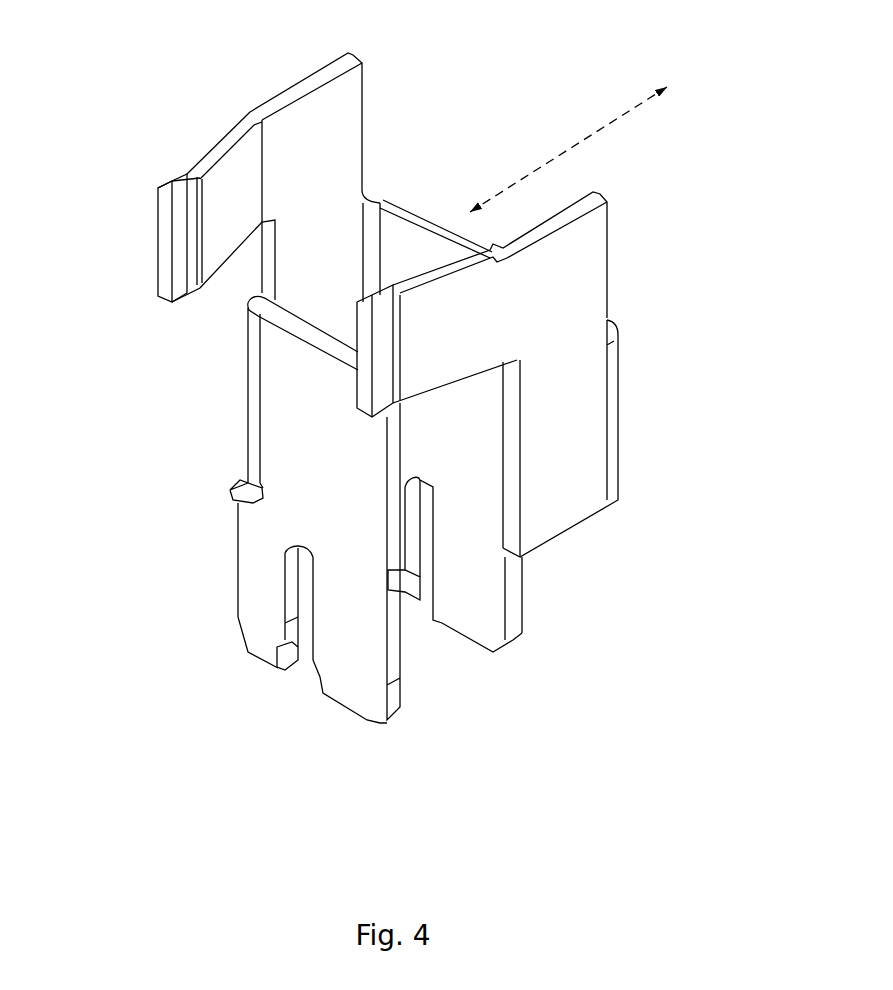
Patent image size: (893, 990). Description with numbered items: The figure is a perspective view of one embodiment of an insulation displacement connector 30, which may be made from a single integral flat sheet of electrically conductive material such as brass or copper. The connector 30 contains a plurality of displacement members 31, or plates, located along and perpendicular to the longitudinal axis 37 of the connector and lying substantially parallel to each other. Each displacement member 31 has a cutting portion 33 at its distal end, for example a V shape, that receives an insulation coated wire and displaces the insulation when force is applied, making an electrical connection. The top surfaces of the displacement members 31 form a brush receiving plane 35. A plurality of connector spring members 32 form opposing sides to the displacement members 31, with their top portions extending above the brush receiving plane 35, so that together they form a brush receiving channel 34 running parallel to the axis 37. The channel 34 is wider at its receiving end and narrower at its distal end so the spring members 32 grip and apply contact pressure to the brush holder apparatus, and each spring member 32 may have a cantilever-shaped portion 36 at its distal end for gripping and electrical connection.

The insulation displacement connector 30 is at (403, 400).
The displacement member 31 is at (380, 638).
The connector spring member 32 is at (322, 208).
The cutting portion 33 is at (302, 647).
The brush receiving channel 34 is at (470, 148).
The brush receiving plane 35 is at (280, 322).
The cantilever-shaped portion 36 is at (212, 190).
The longitudinal axis 37 is at (600, 128).